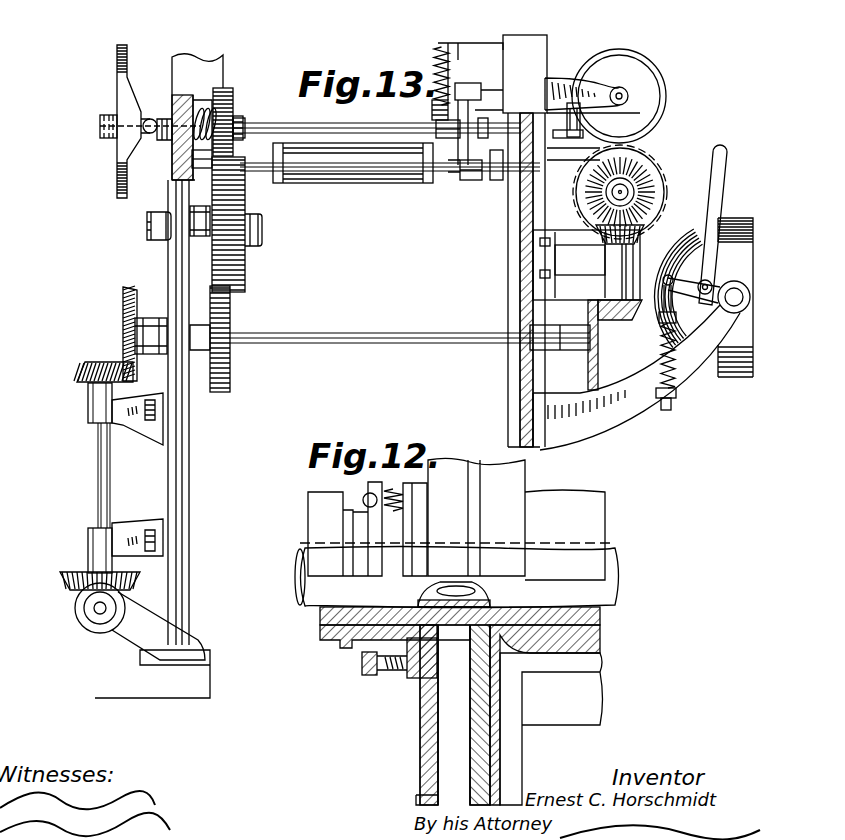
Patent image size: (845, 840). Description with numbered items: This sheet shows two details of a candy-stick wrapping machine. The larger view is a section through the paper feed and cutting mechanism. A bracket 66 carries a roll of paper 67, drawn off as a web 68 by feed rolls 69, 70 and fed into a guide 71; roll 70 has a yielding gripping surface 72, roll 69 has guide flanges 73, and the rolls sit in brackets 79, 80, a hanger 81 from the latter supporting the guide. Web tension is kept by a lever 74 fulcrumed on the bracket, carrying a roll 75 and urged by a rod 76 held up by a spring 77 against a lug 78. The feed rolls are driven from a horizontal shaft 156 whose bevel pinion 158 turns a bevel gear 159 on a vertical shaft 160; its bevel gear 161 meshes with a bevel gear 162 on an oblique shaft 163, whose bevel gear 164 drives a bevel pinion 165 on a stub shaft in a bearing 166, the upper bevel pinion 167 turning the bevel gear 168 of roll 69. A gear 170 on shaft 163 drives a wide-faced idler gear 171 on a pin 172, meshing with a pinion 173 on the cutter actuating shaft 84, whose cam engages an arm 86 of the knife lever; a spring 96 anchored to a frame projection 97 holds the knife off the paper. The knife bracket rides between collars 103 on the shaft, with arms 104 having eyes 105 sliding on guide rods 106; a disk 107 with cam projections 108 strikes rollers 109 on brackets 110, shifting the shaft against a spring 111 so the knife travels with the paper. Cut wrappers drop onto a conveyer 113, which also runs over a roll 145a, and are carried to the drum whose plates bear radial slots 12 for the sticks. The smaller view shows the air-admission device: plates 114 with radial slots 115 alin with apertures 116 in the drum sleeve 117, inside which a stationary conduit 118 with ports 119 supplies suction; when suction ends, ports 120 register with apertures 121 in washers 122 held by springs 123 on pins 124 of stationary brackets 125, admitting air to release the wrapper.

In FIG. 12, the radial slot 12 is at (512, 703).
In FIG. 13, the bracket 66 is at (660, 412).
In FIG. 13, the roll of paper 67 is at (744, 220).
In FIG. 13, the web 68 is at (705, 205).
In FIG. 13, the feed roll 69 is at (648, 162).
In FIG. 13, the feed roll 70 is at (640, 86).
In FIG. 13, the guide 71 is at (600, 150).
In FIG. 13, the gripping surface 72 is at (658, 62).
In FIG. 13, the guide flanges 73 is at (690, 160).
In FIG. 13, the lever 74 is at (722, 178).
In FIG. 13, the roll 75 is at (716, 148).
In FIG. 13, the rod 76 is at (666, 324).
In FIG. 13, the spring 77 is at (672, 355).
In FIG. 13, the lug 78 is at (678, 396).
In FIG. 13, the bracket 79 is at (525, 200).
In FIG. 13, the bracket 80 is at (556, 84).
In FIG. 13, the hanger 81 is at (584, 120).
In FIG. 13, the cutter actuating shaft 84 is at (262, 130).
In FIG. 13, the arm 86 is at (432, 110).
In FIG. 13, the spring 96 is at (436, 57).
In FIG. 13, the projection 97 is at (470, 35).
In FIG. 13, the collars 103 is at (458, 90).
In FIG. 13, the arms 104 is at (466, 165).
In FIG. 13, the eyes 105 is at (472, 178).
In FIG. 13, the guide rods 106 is at (497, 176).
In FIG. 13, the disk 107 is at (116, 172).
In FIG. 13, the cam projections 108 is at (134, 145).
In FIG. 13, the rollers 109 is at (143, 118).
In FIG. 13, the brackets 110 is at (178, 95).
In FIG. 13, the spring 111 is at (216, 92).
In FIG. 13, the conveyer 113 is at (370, 172).
In FIG. 12, the plates 114 is at (455, 470).
In FIG. 12, the radial slots 115 is at (448, 768).
In FIG. 12, the apertures 116 is at (458, 618).
In FIG. 12, the drum sleeve 117 is at (322, 622).
In FIG. 12, the conduit 118 is at (308, 606).
In FIG. 12, the ports 119 is at (480, 591).
In FIG. 12, the ports 120 is at (458, 648).
In FIG. 12, the apertures 121 is at (404, 607).
In FIG. 12, the washers 122 is at (410, 678).
In FIG. 12, the springs 123 is at (403, 496).
In FIG. 12, the pins 124 is at (365, 498).
In FIG. 12, the brackets 125 is at (368, 488).
In FIG. 13, the roll 145a is at (262, 175).
In FIG. 13, the horizontal shaft 156 is at (98, 610).
In FIG. 13, the bevel pinion 158 is at (101, 633).
In FIG. 13, the bevel gear 159 is at (65, 586).
In FIG. 13, the vertical shaft 160 is at (108, 470).
In FIG. 13, the bevel gear 161 is at (80, 376).
In FIG. 13, the bevel gear 162 is at (125, 312).
In FIG. 13, the horizontal shaft 163 is at (305, 345).
In FIG. 13, the bevel gear 164 is at (596, 366).
In FIG. 13, the bevel pinion 165 is at (668, 308).
In FIG. 13, the bearing 166 is at (615, 268).
In FIG. 13, the bevel pinion 167 is at (630, 236).
In FIG. 13, the bevel gear 168 is at (620, 192).
In FIG. 13, the gear 170 is at (226, 384).
In FIG. 13, the idler gear 171 is at (240, 262).
In FIG. 13, the pin 172 is at (262, 228).
In FIG. 13, the pinion 173 is at (232, 100).